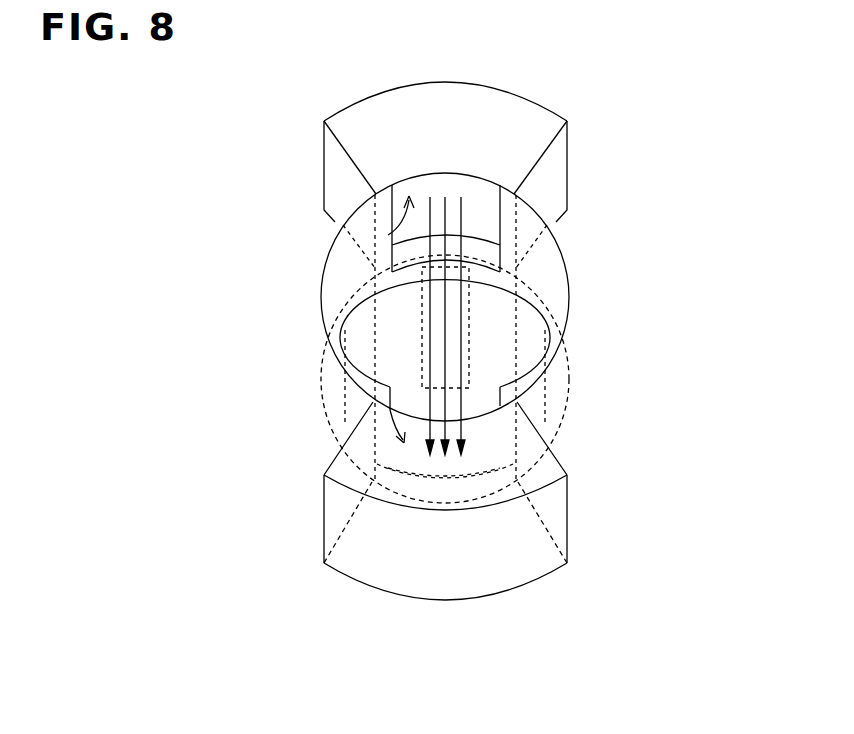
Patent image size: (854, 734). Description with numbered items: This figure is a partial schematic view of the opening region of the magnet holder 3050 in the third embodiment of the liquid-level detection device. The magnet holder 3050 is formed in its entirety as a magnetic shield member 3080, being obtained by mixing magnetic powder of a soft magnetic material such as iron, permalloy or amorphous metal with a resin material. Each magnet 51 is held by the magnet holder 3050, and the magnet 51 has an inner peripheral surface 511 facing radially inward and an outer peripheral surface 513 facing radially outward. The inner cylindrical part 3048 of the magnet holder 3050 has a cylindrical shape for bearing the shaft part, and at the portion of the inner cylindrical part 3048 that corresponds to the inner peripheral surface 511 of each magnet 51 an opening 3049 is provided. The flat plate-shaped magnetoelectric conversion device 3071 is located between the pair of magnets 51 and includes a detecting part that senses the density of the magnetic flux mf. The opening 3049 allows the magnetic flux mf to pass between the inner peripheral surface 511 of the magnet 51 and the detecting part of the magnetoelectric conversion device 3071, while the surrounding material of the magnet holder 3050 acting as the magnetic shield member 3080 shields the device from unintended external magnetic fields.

The magnet 51 is at (523, 117).
The inner peripheral surface 511 is at (390, 230).
The outer peripheral surface 513 is at (397, 562).
The inner cylindrical part 3048 is at (325, 288).
The opening 3049 is at (408, 252).
The magnet holder 3050 is at (186, 357).
The magnetic shield member 3080 is at (507, 235).
The magnetoelectric conversion device 3071 is at (531, 290).
The magnetic flux mf is at (460, 347).